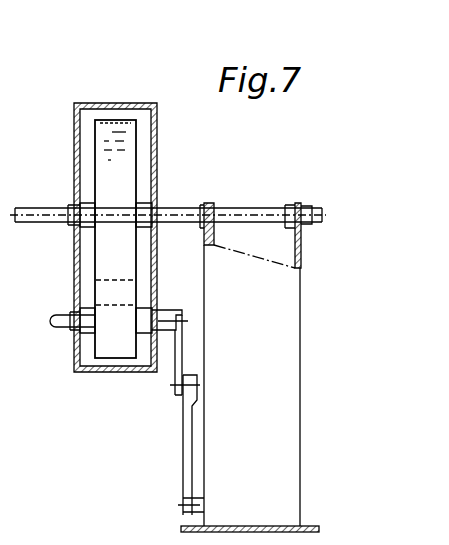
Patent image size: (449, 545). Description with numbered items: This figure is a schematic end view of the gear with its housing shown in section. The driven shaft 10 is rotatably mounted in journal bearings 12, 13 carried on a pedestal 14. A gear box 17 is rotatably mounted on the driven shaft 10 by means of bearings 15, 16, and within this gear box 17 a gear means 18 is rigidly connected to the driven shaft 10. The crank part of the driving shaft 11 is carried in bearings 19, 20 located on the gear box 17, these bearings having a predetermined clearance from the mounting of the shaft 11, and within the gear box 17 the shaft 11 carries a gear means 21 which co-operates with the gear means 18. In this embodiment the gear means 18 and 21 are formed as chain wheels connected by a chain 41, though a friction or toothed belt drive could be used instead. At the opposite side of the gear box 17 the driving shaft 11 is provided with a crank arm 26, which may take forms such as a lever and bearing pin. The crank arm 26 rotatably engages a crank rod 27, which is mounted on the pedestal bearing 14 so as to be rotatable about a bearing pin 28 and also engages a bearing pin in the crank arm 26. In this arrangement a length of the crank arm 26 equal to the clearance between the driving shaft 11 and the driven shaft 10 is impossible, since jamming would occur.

The driven shaft 10 is at (178, 207).
The crank part of the driving shaft 11 is at (52, 321).
The journal bearing 12 is at (293, 207).
The journal bearing 13 is at (216, 207).
The pedestal 14 is at (249, 510).
The bearing 15 is at (152, 207).
The bearing 16 is at (75, 205).
The gear box 17 is at (103, 101).
The gear means 18 is at (95, 152).
The bearing 19 is at (160, 313).
The bearing 20 is at (75, 312).
The gear means 21 is at (93, 345).
The crank arm 26 is at (178, 355).
The crank rod 27 is at (185, 430).
The bearing pin 28 is at (190, 500).
The chain 41 is at (107, 248).